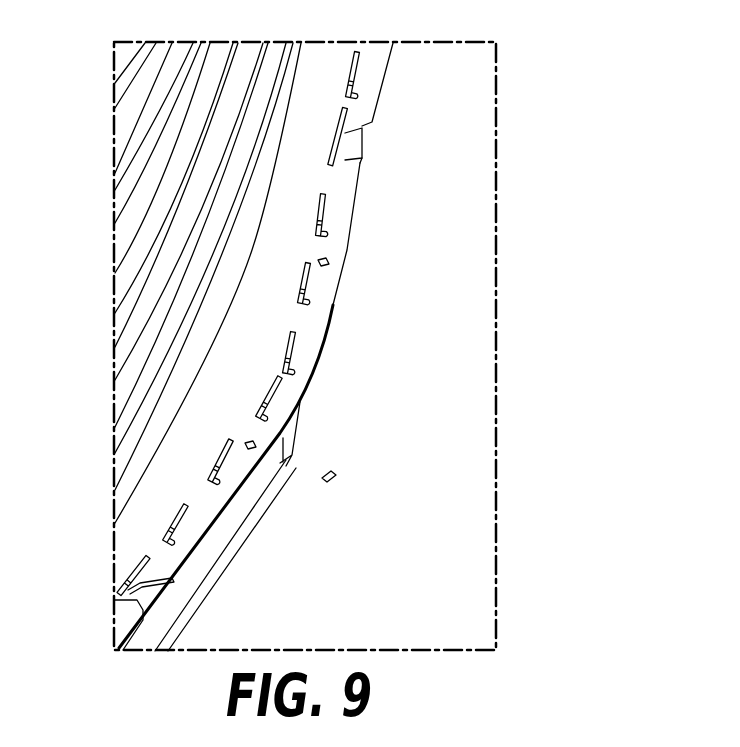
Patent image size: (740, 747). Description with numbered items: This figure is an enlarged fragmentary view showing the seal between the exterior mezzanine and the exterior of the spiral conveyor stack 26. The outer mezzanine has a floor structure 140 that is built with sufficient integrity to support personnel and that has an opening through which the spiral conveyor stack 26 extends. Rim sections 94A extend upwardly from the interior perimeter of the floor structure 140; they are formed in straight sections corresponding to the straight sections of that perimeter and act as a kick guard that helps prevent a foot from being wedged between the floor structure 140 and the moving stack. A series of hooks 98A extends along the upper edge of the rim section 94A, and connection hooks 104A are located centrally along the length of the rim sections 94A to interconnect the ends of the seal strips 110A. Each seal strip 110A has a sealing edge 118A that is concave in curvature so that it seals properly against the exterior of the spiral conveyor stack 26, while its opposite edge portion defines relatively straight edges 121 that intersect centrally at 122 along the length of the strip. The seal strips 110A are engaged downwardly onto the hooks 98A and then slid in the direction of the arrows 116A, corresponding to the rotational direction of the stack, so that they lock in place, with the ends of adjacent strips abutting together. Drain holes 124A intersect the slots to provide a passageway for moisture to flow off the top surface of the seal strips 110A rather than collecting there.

The spiral conveyor stack 26 is at (147, 199).
The rim sections 94A is at (220, 530).
The hooks 98A is at (362, 75).
The connection hooks 104A is at (363, 135).
The seal strips 110A is at (303, 317).
The arrows 116A is at (347, 247).
The sealing edge 118A is at (253, 232).
The straight edges 121 is at (328, 263).
The outer edge portion 122 is at (310, 364).
The drain holes 124A is at (327, 228).
The floor structure 140 is at (383, 463).